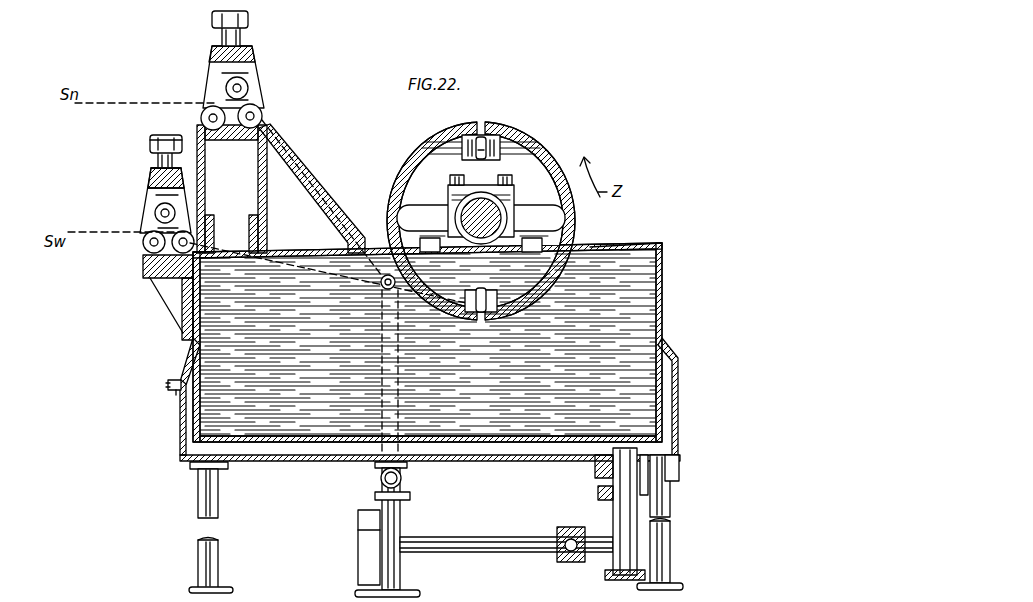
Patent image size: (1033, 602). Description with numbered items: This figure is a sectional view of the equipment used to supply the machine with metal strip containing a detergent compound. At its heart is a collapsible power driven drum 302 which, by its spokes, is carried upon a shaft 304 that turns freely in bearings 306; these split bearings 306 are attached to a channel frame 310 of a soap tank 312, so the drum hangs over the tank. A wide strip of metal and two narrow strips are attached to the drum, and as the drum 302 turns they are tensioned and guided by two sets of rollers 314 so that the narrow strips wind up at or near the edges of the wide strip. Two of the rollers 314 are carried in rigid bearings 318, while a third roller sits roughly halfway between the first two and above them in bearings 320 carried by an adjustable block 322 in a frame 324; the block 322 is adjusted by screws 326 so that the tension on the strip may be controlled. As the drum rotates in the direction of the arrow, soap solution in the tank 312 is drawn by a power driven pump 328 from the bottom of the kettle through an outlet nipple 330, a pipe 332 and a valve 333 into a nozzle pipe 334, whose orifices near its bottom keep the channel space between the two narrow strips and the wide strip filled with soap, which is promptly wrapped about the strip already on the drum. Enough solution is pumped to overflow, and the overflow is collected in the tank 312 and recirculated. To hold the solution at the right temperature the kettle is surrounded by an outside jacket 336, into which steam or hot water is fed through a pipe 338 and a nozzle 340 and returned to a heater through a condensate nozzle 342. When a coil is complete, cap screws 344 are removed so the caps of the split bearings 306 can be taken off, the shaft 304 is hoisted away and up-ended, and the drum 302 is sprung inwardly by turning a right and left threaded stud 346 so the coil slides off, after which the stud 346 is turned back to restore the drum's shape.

The collapsible power driven drum 302 is at (520, 138).
The shaft 304 is at (500, 214).
The bearings 306 is at (508, 193).
The channel frame 310 is at (645, 243).
The soap tank 312 is at (656, 309).
The rollers 314 is at (253, 113).
The rigid bearings 318 is at (212, 123).
The bearings 320 is at (226, 84).
The adjustable block 322 is at (156, 196).
The frame 324 is at (152, 174).
The screws 326 is at (155, 142).
The power driven pump 328 is at (560, 550).
The outlet nipple 330 is at (612, 511).
The pipe 332 is at (498, 537).
The valve 333 is at (381, 479).
The nozzle pipe 334 is at (381, 279).
The outside jacket 336 is at (180, 447).
The pipe 338 is at (172, 380).
The nozzle 340 is at (175, 392).
The condensate nozzle 342 is at (674, 470).
The cap screws 344 is at (463, 155).
The right and left threaded stud 346 is at (481, 160).